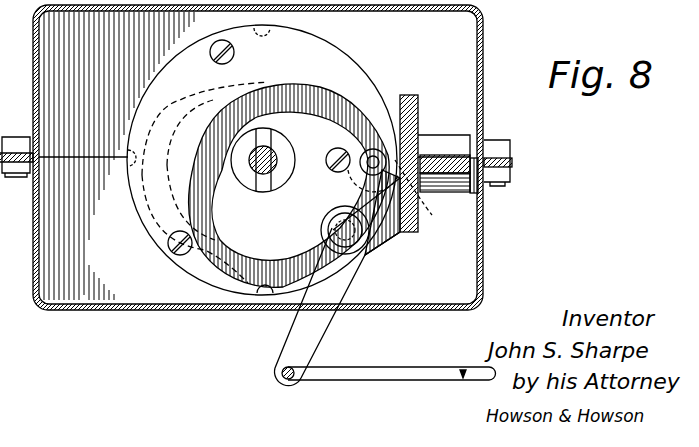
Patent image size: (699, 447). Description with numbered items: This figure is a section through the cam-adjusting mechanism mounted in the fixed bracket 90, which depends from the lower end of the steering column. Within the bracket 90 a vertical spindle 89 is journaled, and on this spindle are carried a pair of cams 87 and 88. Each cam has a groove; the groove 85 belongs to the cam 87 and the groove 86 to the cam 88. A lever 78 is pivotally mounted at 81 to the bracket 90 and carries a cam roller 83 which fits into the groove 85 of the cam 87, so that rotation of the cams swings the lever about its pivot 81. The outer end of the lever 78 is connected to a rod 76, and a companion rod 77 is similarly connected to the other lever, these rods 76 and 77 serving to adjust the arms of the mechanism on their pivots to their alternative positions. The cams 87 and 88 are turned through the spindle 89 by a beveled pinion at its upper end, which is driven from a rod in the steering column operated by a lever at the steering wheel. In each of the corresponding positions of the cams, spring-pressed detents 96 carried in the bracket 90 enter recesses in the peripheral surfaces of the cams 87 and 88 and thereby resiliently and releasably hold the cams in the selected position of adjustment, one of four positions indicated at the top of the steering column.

The rod 76 is at (398, 370).
The rod 77 is at (472, 380).
The lever 78 is at (315, 333).
The pivot 81 is at (330, 230).
The cam roller 83 is at (413, 113).
The groove 85 is at (312, 98).
The groove 86 is at (145, 128).
The cam 87 is at (120, 234).
The cam 88 is at (128, 222).
The vertical spindle 89 is at (270, 158).
The fixed bracket 90 is at (418, 232).
The spring-pressed detents 96 is at (453, 183).